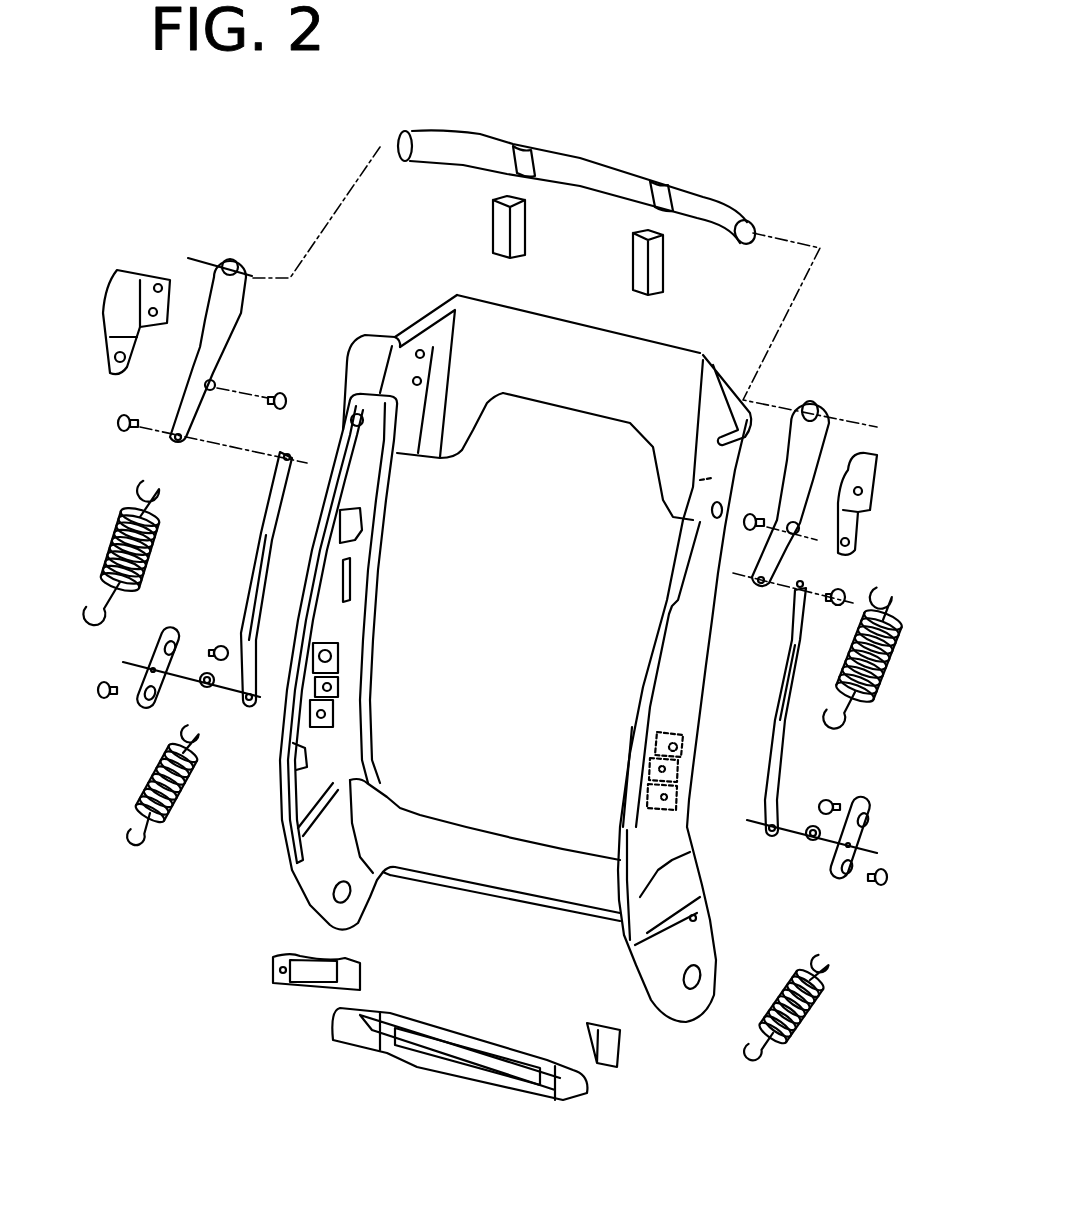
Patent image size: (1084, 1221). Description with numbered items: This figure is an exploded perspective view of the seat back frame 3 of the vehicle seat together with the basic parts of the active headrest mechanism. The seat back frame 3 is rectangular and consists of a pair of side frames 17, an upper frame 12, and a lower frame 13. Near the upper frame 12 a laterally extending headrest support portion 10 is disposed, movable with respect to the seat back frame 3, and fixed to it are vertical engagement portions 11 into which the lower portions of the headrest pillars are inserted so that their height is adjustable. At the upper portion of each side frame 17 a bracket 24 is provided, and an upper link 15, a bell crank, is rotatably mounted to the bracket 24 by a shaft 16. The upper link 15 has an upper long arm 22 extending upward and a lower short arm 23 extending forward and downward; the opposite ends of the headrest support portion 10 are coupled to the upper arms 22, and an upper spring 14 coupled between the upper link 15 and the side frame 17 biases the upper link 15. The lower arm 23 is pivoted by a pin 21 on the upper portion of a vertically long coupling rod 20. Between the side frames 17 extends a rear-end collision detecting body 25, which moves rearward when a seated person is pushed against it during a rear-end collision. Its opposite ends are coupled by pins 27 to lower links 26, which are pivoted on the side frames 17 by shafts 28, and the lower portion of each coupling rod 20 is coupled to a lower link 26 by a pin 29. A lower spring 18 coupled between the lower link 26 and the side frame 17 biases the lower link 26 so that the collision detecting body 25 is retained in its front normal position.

The seat back frame 3 is at (413, 322).
The headrest support portion 10 is at (572, 166).
The vertical engagement portions 11 is at (513, 227).
The upper frame 12 is at (570, 337).
The lower frame 13 is at (490, 863).
The upper spring 14 is at (118, 540).
The upper link 15 is at (233, 318).
The shaft 16 is at (284, 393).
The side frames 17 is at (350, 647).
The lower spring 18 is at (192, 793).
The coupling rod 20 is at (252, 537).
The pin 21 is at (115, 428).
The upper long arm 22 is at (215, 300).
The lower short arm 23 is at (193, 411).
The bracket 24 is at (137, 280).
The collision detecting body 25 is at (447, 1020).
The lower links 26 is at (150, 645).
The pins 27 is at (103, 703).
The shafts 28 is at (222, 645).
The pin 29 is at (203, 687).